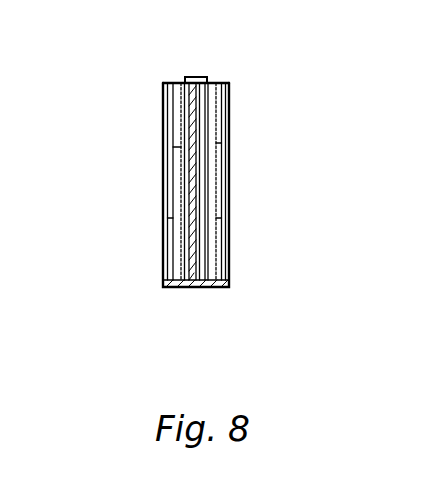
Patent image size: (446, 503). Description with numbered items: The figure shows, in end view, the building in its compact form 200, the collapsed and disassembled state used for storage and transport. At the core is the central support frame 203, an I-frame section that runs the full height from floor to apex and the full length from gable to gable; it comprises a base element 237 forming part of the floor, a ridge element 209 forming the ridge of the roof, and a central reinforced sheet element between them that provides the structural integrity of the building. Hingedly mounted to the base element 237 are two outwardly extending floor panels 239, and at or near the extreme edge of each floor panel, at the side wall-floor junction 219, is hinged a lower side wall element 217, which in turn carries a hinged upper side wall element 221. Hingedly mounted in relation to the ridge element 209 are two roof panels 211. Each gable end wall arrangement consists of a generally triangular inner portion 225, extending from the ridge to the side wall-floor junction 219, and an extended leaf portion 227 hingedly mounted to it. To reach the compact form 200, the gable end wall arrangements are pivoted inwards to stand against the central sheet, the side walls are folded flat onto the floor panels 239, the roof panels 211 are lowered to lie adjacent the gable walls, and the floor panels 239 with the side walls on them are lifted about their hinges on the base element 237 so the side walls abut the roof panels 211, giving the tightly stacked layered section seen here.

The building in compact form 200 is at (323, 74).
The central support frame 203 is at (231, 95).
The ridge element 209 is at (197, 77).
The roof panel 211 is at (181, 102).
The lower side wall element 217 is at (172, 133).
The side wall-floor junction 219 is at (184, 82).
The upper side wall element 221 is at (170, 188).
The inner portion 225 is at (193, 193).
The extended leaf portion 227 is at (262, 238).
The base element 237 is at (210, 288).
The floor panel 239 is at (166, 210).